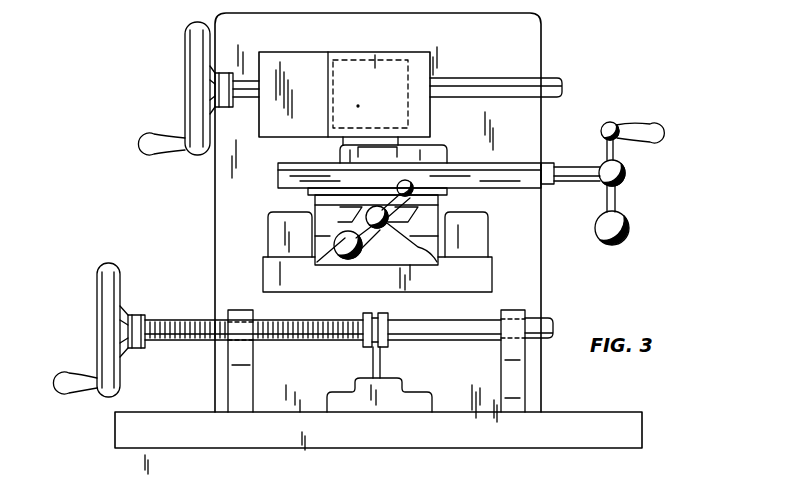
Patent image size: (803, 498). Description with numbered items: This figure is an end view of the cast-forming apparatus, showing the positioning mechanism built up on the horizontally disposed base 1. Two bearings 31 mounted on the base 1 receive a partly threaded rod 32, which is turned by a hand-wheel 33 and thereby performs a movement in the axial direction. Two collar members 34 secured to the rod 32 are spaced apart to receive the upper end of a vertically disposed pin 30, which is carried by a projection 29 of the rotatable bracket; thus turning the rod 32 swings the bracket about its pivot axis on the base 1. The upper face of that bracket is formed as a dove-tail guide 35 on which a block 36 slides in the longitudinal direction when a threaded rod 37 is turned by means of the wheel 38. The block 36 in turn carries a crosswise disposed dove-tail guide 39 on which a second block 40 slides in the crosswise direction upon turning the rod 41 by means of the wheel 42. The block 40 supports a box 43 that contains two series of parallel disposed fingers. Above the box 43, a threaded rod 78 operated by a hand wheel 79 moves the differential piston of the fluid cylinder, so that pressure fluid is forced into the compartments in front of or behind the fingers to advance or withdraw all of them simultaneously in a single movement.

The base 1 is at (452, 433).
The projection 29 is at (423, 372).
The pin 30 is at (373, 360).
The bearings 31 is at (240, 380).
The partly threaded rod 32 is at (197, 298).
The hand-wheel 33 is at (95, 312).
The collar members 34 is at (383, 313).
The dove-tail guide 35 is at (428, 230).
The block 36 is at (432, 197).
The threaded rod 37 is at (437, 262).
The wheel 38 is at (385, 233).
The crosswise dove-tail guide 39 is at (432, 177).
The second block 40 is at (430, 146).
The rod 41 is at (550, 187).
The wheel 42 is at (618, 195).
The box 43 is at (418, 54).
The threaded rod 78 is at (548, 83).
The hand wheel 79 is at (183, 89).